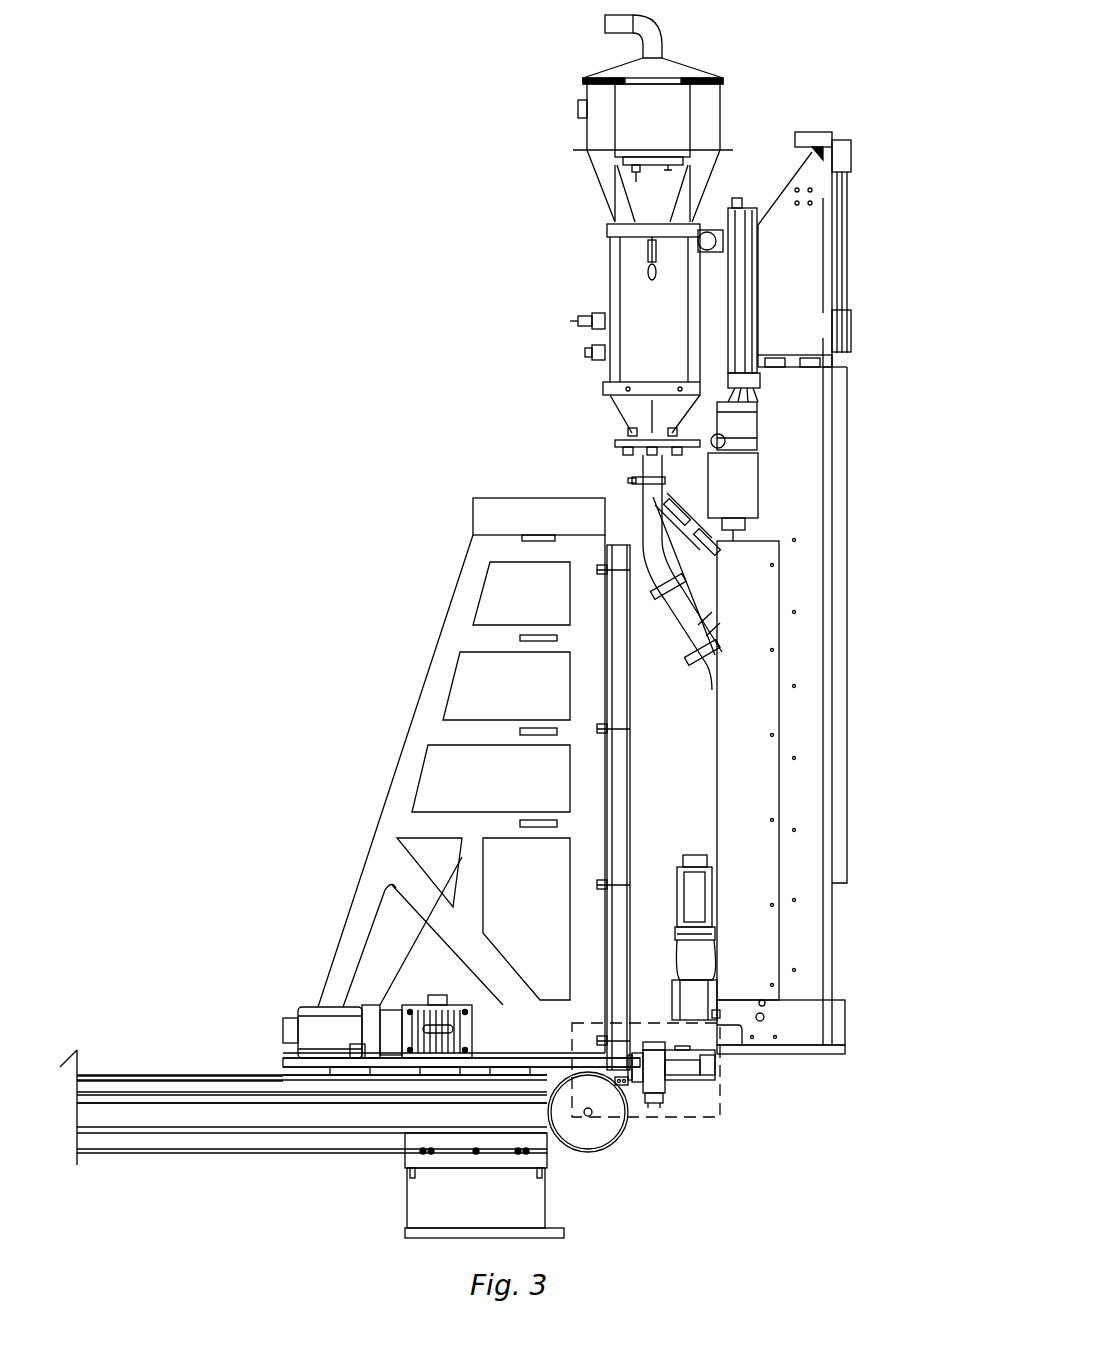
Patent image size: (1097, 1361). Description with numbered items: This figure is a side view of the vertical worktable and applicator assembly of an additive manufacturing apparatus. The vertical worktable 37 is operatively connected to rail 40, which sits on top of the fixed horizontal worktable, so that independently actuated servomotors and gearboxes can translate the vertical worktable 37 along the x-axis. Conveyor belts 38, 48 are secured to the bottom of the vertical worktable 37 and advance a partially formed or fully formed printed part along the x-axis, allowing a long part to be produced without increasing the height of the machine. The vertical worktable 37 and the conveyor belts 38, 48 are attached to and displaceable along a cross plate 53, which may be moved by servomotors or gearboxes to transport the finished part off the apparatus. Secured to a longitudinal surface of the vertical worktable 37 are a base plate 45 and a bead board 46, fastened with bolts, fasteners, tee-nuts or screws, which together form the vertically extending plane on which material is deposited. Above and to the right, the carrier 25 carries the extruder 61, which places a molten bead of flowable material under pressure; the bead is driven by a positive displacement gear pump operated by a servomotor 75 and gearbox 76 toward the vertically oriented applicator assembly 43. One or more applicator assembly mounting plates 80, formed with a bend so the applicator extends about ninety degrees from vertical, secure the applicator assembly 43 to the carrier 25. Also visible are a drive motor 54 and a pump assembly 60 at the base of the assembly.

The carrier 25 is at (915, 548).
The vertical worktable 37 is at (538, 535).
The conveyor belt 38 is at (222, 1075).
The rail 40 is at (223, 1076).
The applicator assembly 43 is at (670, 1108).
The base plate 45 is at (617, 545).
The bead board 46 is at (626, 540).
The conveyor belt 48 is at (180, 1078).
The cross plate 53 is at (493, 1060).
The drive motor 54 is at (357, 1050).
The pump assembly 60 is at (712, 1067).
The extruder 61 is at (740, 492).
The servomotor 75 is at (690, 855).
The gearbox 76 is at (680, 1000).
The applicator assembly mounting plate 80 is at (755, 1062).